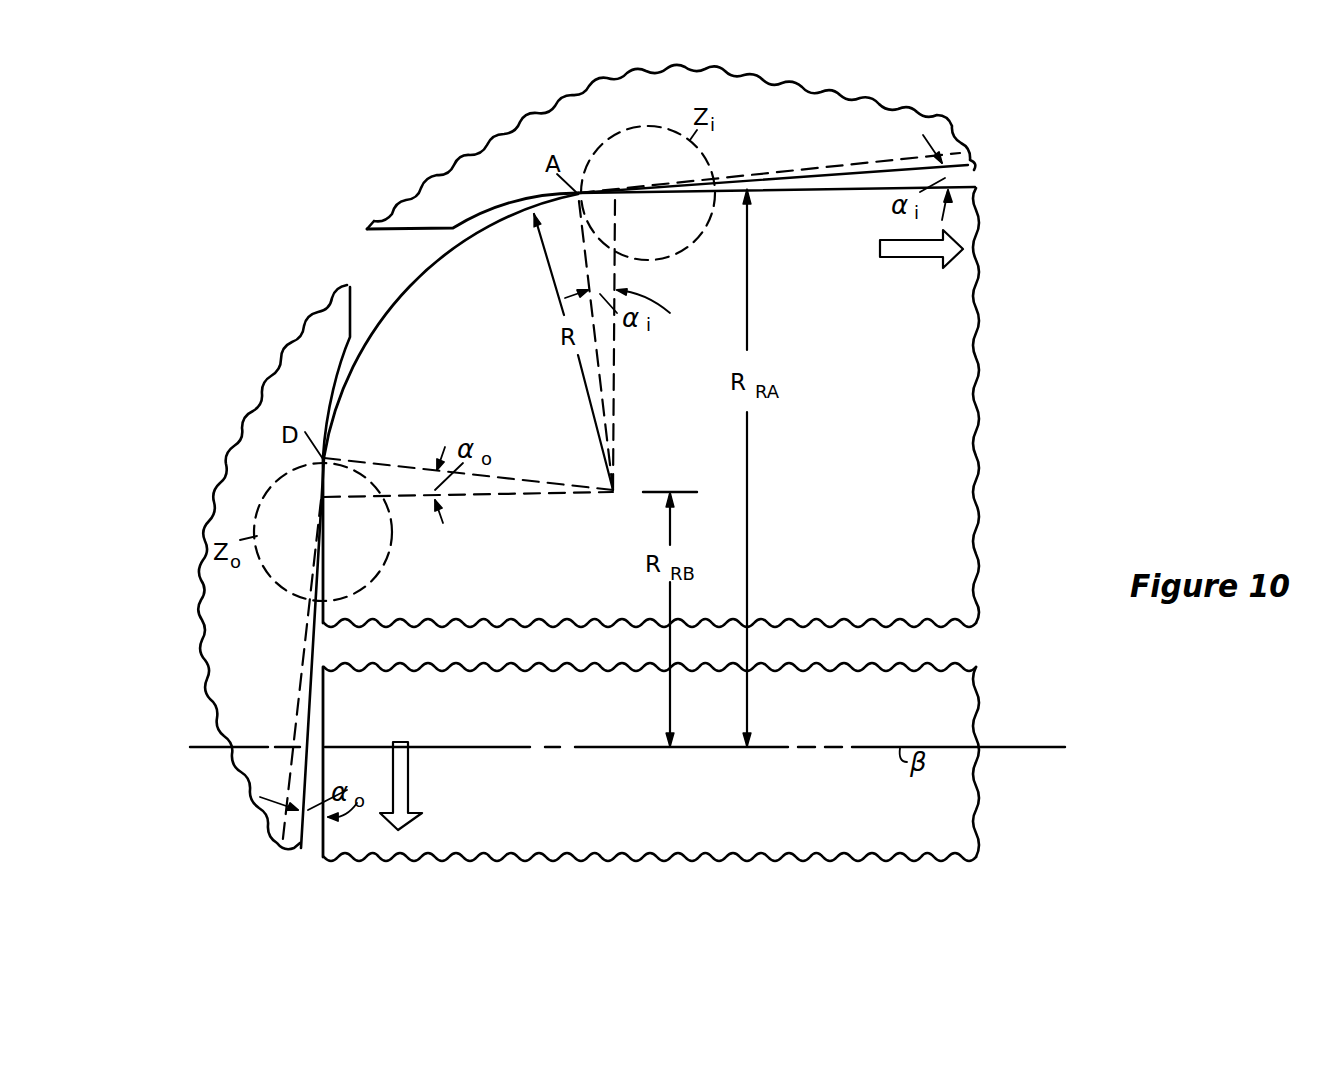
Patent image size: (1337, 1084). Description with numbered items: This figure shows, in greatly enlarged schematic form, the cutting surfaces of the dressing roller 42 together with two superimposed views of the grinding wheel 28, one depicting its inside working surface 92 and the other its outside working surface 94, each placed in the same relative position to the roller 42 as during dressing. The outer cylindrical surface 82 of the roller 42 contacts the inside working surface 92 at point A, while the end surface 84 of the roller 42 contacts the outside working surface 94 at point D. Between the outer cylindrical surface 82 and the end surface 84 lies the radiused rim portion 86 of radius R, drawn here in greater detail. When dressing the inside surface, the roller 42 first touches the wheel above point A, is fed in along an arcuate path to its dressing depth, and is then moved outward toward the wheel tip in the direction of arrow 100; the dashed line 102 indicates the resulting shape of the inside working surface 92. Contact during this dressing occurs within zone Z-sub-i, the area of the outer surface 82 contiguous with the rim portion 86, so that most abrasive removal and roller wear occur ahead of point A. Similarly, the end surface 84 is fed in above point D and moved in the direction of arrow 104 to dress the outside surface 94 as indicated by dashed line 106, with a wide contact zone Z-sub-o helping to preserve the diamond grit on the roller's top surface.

The grinding wheel 28 is at (758, 84).
The dressing roller 42 is at (940, 430).
The outer cylindrical surface 82 is at (850, 188).
The end surface 84 is at (326, 706).
The radiused rim portion 86 is at (410, 283).
The inside working surface 92 is at (968, 166).
The outside working surface 94 is at (301, 848).
The arrow 100 is at (920, 247).
The dashed line 102 is at (812, 168).
The arrow 104 is at (403, 780).
The dashed line 106 is at (298, 698).